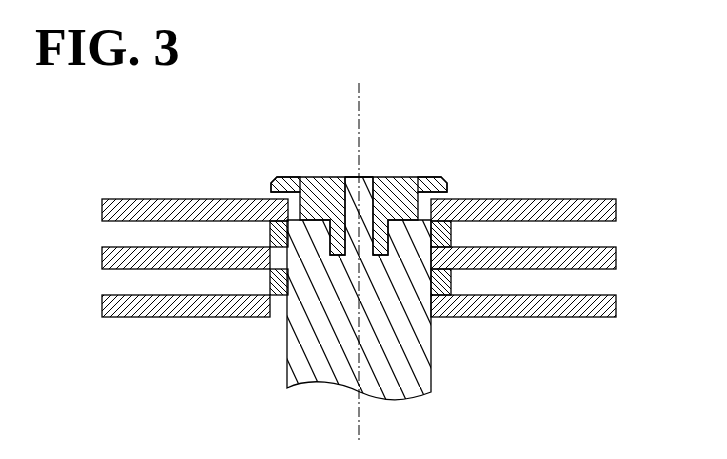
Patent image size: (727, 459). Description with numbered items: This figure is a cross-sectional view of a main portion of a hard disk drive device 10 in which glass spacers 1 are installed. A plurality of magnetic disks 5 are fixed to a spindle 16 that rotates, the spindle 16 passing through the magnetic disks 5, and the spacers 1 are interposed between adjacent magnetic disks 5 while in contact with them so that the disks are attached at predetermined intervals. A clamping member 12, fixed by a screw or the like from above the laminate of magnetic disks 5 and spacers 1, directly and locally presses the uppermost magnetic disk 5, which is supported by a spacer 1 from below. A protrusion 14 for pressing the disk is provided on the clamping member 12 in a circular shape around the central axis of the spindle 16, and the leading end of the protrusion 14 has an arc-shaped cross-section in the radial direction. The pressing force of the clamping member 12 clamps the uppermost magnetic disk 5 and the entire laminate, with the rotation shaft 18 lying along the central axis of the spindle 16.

The glass spacer 1 is at (270, 235).
The magnetic disk 5 is at (617, 208).
The hard disk drive device 10 is at (473, 134).
The clamping member 12 is at (357, 192).
The protrusion 14 is at (272, 192).
The spindle 16 is at (424, 358).
The rotation shaft 18 is at (345, 177).